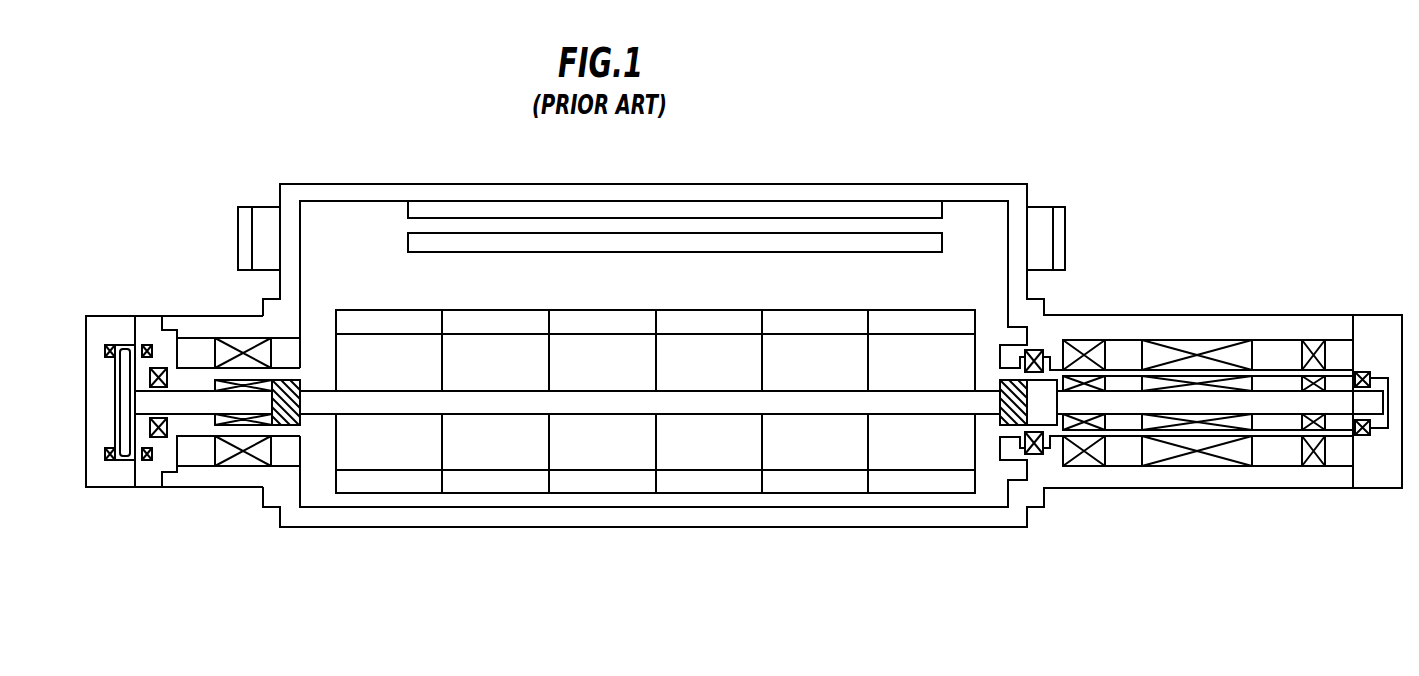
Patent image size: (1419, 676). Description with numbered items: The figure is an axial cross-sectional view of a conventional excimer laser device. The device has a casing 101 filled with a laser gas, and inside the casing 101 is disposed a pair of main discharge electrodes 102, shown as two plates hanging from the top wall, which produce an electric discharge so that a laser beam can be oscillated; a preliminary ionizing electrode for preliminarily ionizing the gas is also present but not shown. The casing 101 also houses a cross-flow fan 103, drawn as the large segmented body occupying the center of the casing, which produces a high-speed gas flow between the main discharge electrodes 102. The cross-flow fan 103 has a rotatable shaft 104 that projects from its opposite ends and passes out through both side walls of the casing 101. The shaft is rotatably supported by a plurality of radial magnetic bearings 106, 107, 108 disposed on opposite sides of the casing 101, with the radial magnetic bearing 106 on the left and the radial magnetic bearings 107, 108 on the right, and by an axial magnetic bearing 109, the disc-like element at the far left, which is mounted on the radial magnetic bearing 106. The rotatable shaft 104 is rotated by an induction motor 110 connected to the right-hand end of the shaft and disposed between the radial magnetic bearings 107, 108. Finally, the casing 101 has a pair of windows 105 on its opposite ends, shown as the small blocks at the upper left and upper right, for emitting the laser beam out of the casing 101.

The casing 101 is at (932, 192).
The main discharge electrodes 102 is at (833, 208).
The cross-flow fan 103 is at (610, 483).
The rotatable shaft 104 is at (497, 402).
The windows 105 is at (262, 212).
The radial magnetic bearing 106 is at (243, 470).
The radial magnetic bearing 107 is at (1093, 472).
The radial magnetic bearing 108 is at (1315, 472).
The axial magnetic bearing 109 is at (123, 467).
The induction motor 110 is at (1208, 472).